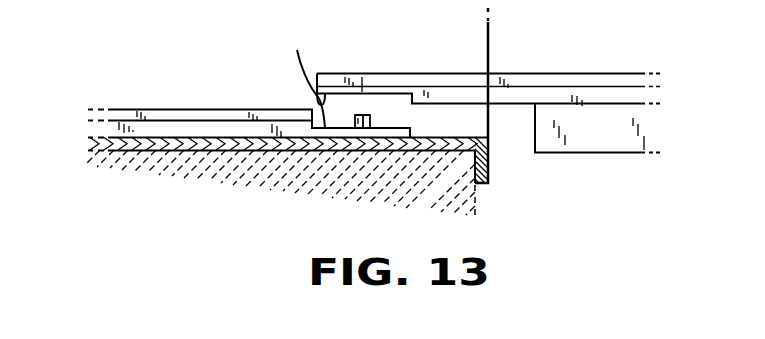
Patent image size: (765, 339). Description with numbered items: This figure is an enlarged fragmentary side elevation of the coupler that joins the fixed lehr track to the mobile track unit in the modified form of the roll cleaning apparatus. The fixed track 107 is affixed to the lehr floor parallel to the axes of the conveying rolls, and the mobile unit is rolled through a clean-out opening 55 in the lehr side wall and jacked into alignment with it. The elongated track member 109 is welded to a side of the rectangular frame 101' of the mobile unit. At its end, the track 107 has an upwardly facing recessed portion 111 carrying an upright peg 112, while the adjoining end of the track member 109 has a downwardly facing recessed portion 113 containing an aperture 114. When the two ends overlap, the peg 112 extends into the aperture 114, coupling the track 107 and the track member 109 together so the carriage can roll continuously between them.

The clean-out opening 55 is at (467, 137).
The frame 101' is at (597, 161).
The track 107 is at (130, 110).
The track member 109 is at (547, 82).
The upwardly facing recessed portion 111 is at (315, 103).
The upright peg 112 is at (372, 120).
The downwardly facing recessed portion 113 is at (303, 80).
The aperture 114 is at (362, 72).